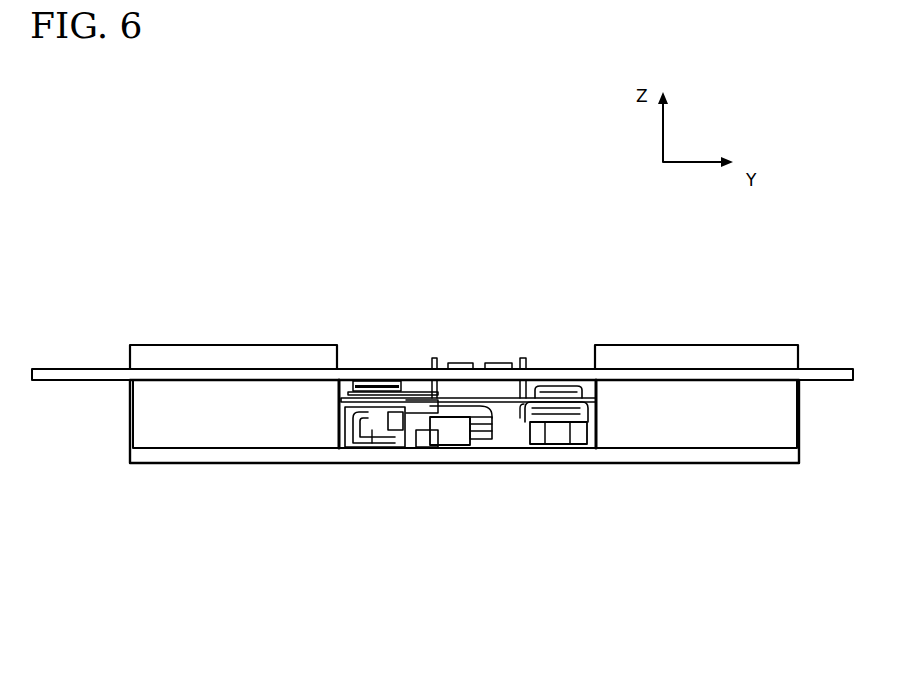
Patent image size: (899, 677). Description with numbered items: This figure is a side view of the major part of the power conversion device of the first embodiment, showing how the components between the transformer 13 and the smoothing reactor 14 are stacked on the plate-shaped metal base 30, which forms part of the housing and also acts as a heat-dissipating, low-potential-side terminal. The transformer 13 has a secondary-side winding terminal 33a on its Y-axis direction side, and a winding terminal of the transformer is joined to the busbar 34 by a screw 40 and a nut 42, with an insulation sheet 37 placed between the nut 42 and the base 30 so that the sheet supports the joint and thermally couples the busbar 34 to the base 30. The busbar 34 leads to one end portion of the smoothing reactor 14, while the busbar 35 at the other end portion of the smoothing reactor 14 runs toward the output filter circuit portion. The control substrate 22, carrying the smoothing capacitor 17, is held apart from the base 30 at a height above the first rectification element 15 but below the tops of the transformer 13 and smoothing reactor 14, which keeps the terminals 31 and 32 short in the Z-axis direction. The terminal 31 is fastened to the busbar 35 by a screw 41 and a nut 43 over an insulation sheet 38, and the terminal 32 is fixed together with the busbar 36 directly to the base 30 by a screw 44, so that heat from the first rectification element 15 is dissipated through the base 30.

The transformer 13 is at (166, 360).
The smoothing reactor 14 is at (700, 360).
The first rectification element 15 is at (448, 430).
The smoothing capacitor 17 is at (468, 366).
The control substrate 22 is at (763, 377).
The base 30 is at (212, 455).
The terminal 31 is at (523, 366).
The terminal 32 is at (434, 366).
The secondary-side winding terminal 33a is at (352, 424).
The busbar 34 is at (582, 386).
The busbar 35 is at (595, 430).
The busbar 36 is at (424, 440).
The insulation sheet 37 is at (362, 440).
The insulation sheet 38 is at (545, 440).
The screw 40 is at (368, 385).
The screw 41 is at (549, 397).
The nut 42 is at (368, 440).
The nut 43 is at (573, 440).
The screw 44 is at (487, 440).